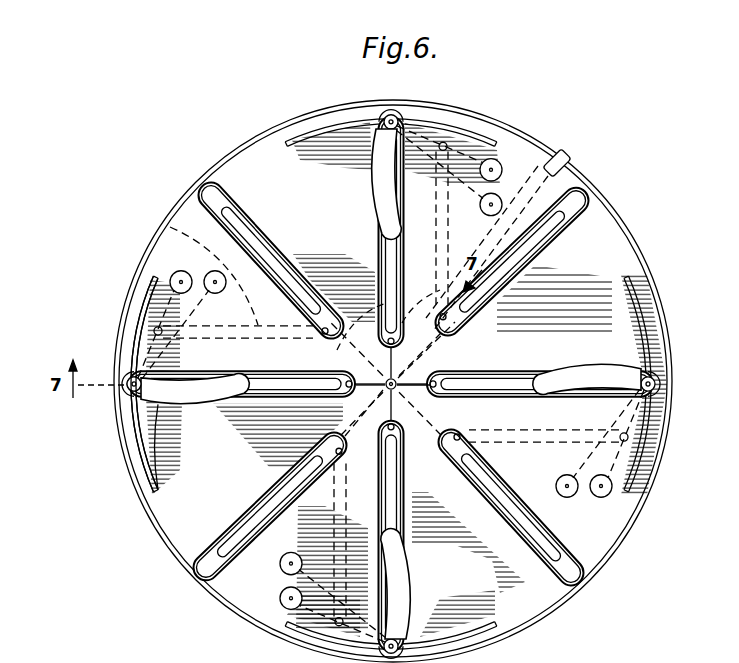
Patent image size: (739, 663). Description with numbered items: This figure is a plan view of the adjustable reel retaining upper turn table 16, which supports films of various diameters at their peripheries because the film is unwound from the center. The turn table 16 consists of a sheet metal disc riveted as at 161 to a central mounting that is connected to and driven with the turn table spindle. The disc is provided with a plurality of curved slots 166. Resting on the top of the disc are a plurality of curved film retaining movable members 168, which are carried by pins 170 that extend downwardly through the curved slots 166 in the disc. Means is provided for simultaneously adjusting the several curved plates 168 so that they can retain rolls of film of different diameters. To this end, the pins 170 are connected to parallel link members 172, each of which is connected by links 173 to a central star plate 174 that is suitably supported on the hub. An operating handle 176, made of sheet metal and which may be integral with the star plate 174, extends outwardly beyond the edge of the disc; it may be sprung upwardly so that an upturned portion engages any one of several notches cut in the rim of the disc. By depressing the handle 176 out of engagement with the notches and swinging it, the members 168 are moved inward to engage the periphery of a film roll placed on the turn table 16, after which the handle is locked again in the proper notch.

The upper turn table 16 is at (630, 526).
The rivets 161 is at (434, 397).
The curved slots 166 is at (148, 400).
The curved film retaining movable members 168 is at (150, 491).
The pins 170 is at (133, 379).
The parallel link members 172 is at (148, 300).
The links 173 is at (168, 225).
The central star plate 174 is at (336, 342).
The operating handle 176 is at (562, 154).